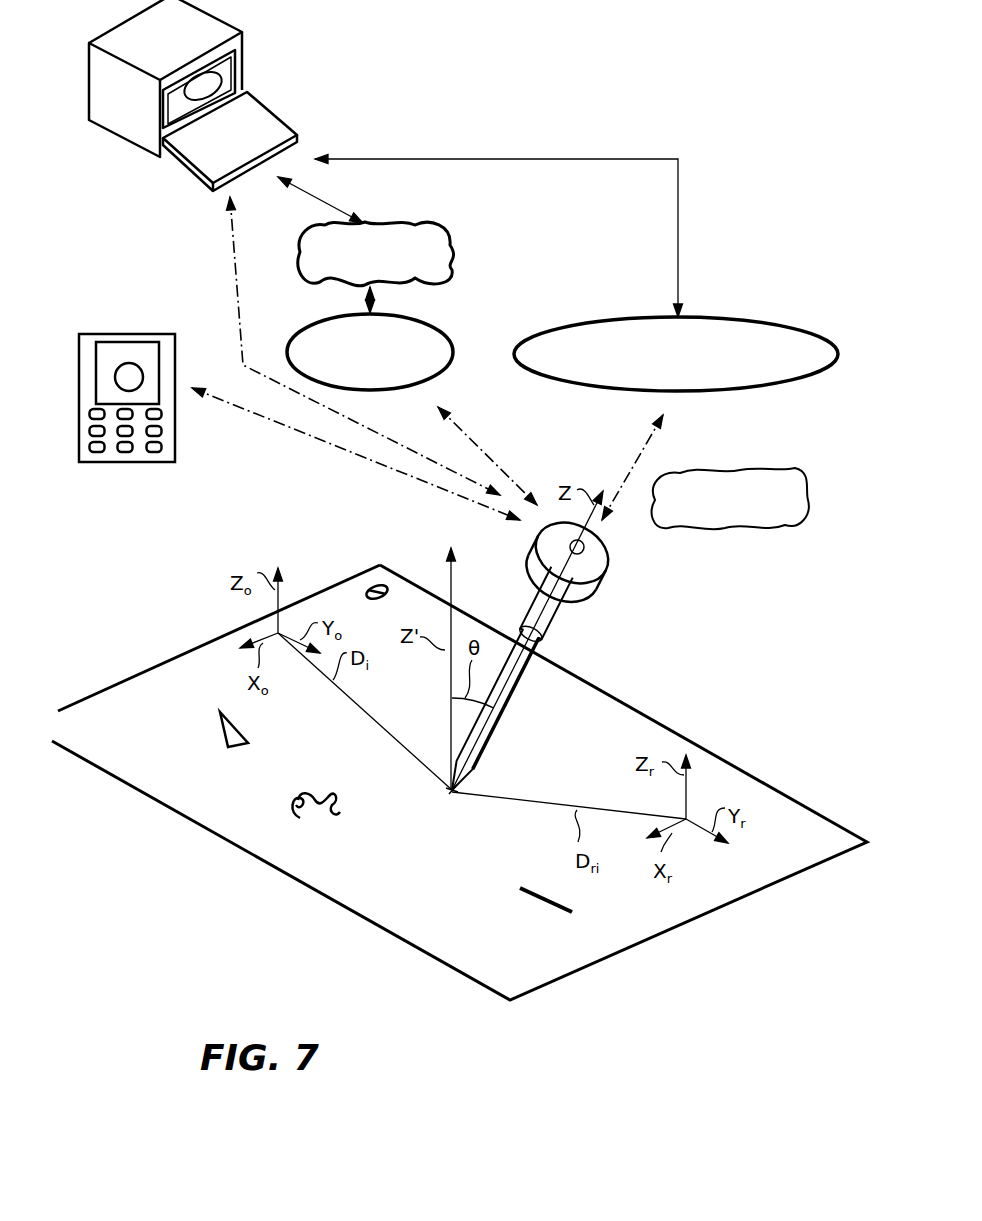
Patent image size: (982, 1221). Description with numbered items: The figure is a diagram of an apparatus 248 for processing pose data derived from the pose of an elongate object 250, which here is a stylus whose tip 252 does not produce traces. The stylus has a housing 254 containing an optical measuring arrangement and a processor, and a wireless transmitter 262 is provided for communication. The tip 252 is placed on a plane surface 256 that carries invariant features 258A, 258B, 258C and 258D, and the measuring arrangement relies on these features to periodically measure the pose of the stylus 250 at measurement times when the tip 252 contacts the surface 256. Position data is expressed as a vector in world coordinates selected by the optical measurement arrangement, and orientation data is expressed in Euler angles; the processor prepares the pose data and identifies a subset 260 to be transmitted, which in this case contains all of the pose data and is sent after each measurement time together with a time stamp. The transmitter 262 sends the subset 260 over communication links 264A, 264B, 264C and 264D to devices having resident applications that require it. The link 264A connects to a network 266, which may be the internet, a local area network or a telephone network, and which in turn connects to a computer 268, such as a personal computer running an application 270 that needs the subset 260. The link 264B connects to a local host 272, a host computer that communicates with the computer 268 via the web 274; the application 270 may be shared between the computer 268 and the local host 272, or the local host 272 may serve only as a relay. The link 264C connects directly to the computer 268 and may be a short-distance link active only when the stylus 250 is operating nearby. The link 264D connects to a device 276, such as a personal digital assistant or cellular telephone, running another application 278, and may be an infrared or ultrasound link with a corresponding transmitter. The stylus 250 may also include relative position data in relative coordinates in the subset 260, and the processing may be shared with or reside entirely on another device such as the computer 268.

The apparatus 248 is at (170, 533).
The elongate object 250 is at (500, 723).
The tip 252 is at (452, 800).
The housing 254 is at (529, 557).
The plane surface 256 is at (395, 934).
The invariant feature 258A is at (365, 585).
The invariant feature 258B is at (222, 730).
The invariant feature 258C is at (338, 812).
The invariant feature 258D is at (540, 905).
The subset 260 is at (704, 530).
The wireless transmitter 262 is at (600, 578).
The communication link 264A is at (647, 443).
The communication link 264B is at (487, 455).
The communication link 264C is at (240, 300).
The communication link 264D is at (325, 443).
The network 266 is at (760, 320).
The computer 268 is at (228, 22).
The application 270 is at (232, 74).
The local host 272 is at (453, 350).
The web 274 is at (455, 243).
The device 276 is at (110, 333).
The application 278 is at (143, 363).